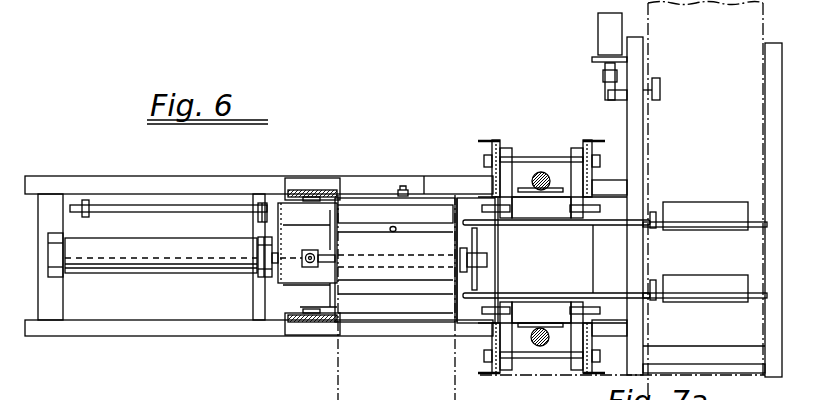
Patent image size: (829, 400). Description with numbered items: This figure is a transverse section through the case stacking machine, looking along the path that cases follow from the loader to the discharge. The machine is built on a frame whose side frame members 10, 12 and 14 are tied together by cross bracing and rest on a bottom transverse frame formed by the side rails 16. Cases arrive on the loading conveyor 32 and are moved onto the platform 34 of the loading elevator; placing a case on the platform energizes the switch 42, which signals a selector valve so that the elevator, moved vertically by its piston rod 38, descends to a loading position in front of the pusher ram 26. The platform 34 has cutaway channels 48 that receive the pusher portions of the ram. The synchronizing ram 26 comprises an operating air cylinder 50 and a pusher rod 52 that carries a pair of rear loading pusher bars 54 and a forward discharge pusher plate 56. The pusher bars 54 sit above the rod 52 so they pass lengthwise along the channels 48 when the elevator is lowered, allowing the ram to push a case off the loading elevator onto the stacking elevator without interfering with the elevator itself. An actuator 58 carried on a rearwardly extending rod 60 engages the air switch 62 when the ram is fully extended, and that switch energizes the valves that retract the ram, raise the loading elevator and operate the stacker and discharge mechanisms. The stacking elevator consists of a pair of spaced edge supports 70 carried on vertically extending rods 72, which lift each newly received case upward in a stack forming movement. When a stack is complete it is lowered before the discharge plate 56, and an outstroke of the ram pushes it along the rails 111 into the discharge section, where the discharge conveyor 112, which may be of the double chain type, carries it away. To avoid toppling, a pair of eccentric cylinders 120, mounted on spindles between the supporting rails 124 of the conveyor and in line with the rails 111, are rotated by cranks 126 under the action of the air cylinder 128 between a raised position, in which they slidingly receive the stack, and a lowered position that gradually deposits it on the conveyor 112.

The side frame member 10 is at (287, 178).
The side frame member 12 is at (492, 140).
The side frame member 14 is at (600, 140).
The side rail 16 is at (425, 186).
The pusher ram 26 is at (326, 256).
The loading conveyor 32 is at (338, 372).
The platform 34 is at (374, 207).
The piston rod 38 is at (313, 250).
The switch 42 is at (404, 187).
The channel 48 is at (393, 228).
The air cylinder 50 is at (184, 262).
The pusher rod 52 is at (386, 256).
The loading pusher bar 54 is at (313, 228).
The discharge pusher plate 56 is at (480, 236).
The actuator 58 is at (88, 200).
The rearwardly extending rod 60 is at (175, 205).
The air switch 62 is at (263, 203).
The edge support 70 is at (552, 208).
The vertically extending rod 72 is at (543, 172).
The rail 111 is at (593, 226).
The discharge conveyor 112 is at (710, 376).
The eccentric cylinder 120 is at (703, 218).
The supporting rail 124 is at (773, 60).
The crank 126 is at (605, 88).
The air cylinder 128 is at (608, 35).